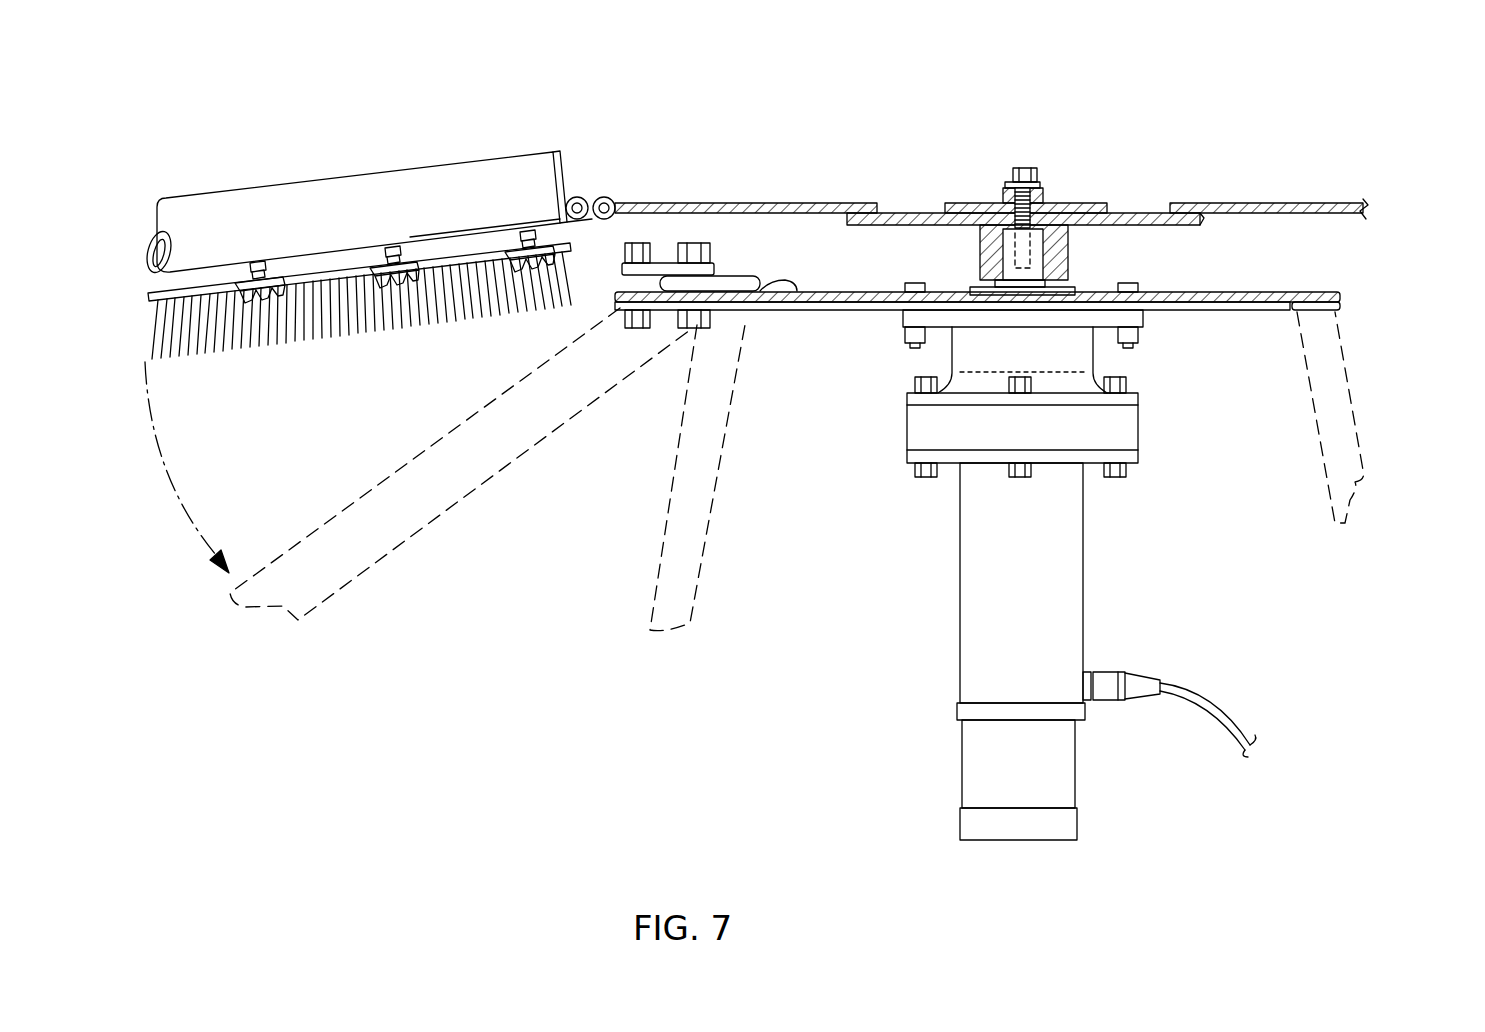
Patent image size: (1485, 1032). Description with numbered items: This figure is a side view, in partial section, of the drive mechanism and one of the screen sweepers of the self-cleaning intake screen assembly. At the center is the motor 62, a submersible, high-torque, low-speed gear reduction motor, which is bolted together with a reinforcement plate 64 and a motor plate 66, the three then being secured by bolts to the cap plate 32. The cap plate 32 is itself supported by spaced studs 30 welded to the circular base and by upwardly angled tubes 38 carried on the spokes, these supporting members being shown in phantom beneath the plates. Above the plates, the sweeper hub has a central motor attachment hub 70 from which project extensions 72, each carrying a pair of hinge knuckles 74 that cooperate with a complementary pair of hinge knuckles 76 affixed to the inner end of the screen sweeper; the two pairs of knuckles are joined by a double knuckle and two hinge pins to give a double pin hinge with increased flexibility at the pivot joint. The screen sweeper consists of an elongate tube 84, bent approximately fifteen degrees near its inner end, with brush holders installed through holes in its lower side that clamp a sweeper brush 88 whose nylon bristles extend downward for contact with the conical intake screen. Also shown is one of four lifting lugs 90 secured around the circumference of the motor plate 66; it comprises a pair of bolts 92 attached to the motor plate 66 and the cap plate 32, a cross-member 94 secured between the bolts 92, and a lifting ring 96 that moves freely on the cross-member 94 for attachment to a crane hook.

The stud 30 is at (467, 492).
The cap plate 32 is at (1290, 310).
The upwardly angled tube 38 is at (1350, 362).
The motor 62 is at (1090, 575).
The reinforcement plate 64 is at (862, 310).
The motor plate 66 is at (1193, 292).
The central motor attachment hub 70 is at (1040, 190).
The extension 72 is at (800, 203).
The hinge knuckles 74 is at (610, 198).
The hinge knuckles 76 is at (580, 196).
The elongate tube 84 is at (350, 177).
The sweeper brush 88 is at (330, 345).
The lifting lug 90 is at (674, 238).
The bolts 92 is at (625, 248).
The cross-member 94 is at (735, 277).
The lifting ring 96 is at (790, 307).